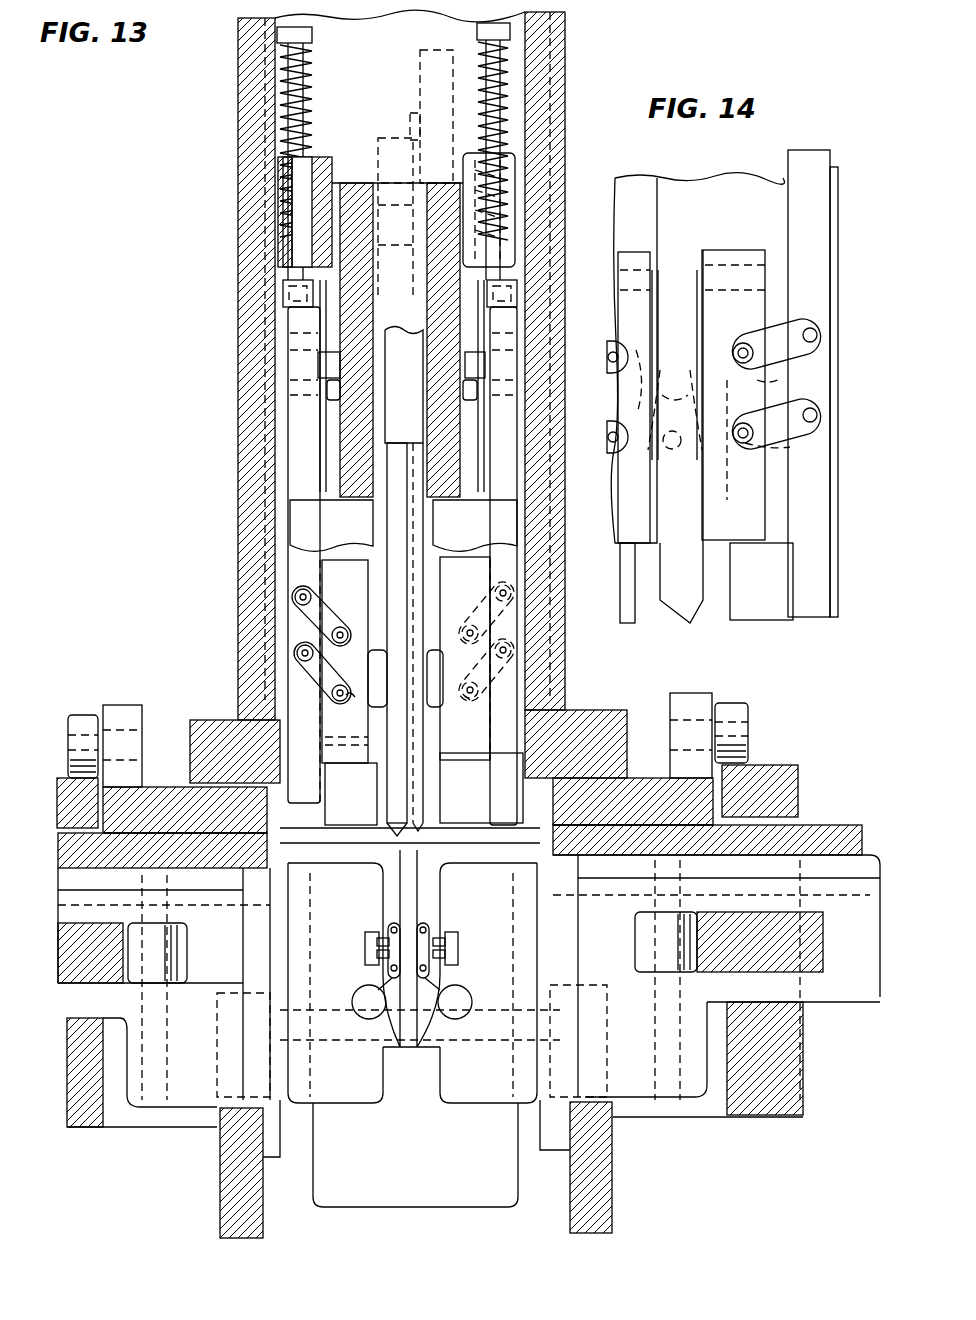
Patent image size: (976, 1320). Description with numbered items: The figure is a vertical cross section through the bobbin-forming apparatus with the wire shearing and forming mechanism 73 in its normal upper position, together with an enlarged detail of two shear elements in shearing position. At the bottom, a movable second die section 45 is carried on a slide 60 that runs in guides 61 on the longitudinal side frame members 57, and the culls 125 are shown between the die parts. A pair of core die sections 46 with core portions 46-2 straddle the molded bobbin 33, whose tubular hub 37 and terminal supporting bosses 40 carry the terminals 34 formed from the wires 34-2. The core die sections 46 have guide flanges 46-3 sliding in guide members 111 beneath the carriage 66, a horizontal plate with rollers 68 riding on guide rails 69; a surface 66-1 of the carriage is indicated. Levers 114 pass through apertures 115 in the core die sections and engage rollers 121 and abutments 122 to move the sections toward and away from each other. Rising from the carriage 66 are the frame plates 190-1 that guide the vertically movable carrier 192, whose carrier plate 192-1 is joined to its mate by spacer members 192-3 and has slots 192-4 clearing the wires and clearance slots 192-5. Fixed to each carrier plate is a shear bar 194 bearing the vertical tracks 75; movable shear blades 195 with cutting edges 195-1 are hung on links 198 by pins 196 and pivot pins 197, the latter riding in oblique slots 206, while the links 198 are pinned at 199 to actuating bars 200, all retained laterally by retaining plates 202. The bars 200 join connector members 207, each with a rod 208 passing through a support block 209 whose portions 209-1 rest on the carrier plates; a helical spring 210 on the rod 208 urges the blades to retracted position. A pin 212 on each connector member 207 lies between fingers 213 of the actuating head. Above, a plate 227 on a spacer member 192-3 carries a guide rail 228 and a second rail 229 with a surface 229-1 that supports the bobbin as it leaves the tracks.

In FIG. 13, the frame plates 190-1 is at (250, 156).
In FIG. 13, the helical spring 210 is at (312, 66).
In FIG. 13, the rod 208 is at (312, 106).
In FIG. 13, the support block 209 is at (290, 258).
In FIG. 13, the portions of support block 209-1 is at (287, 207).
In FIG. 13, the plate 227 is at (420, 60).
In FIG. 13, the guide rail 228 is at (410, 115).
In FIG. 13, the second rail 229 is at (383, 170).
In FIG. 13, the surface of second rail 229-1 is at (410, 134).
In FIG. 13, the spacer members 192-3 is at (356, 440).
In FIG. 14, the spacer members 192-3 is at (638, 397).
In FIG. 13, the pin 212 is at (468, 352).
In FIG. 13, the wire shearing and forming mechanism 73 is at (406, 625).
In FIG. 13, the connector members 207 is at (285, 314).
In FIG. 13, the fingers 213 is at (285, 296).
In FIG. 13, the retaining plates 202 is at (298, 524).
In FIG. 13, the clearance slots 192-5 is at (403, 525).
In FIG. 13, the shear blades 195 is at (330, 568).
In FIG. 14, the shear blades 195 is at (625, 543).
In FIG. 13, the pins 199 is at (294, 598).
In FIG. 13, the links 198 is at (340, 627).
In FIG. 14, the links 198 is at (610, 425).
In FIG. 13, the pin 196 is at (332, 636).
In FIG. 14, the pin 196 is at (608, 352).
In FIG. 13, the pivot pin 197 is at (331, 693).
In FIG. 14, the pivot pin 197 is at (608, 448).
In FIG. 13, the slots 206 is at (350, 700).
In FIG. 14, the slots 206 is at (790, 447).
In FIG. 13, the cutting edge 195-1 is at (378, 707).
In FIG. 14, the cutting edge 195-1 is at (776, 390).
In FIG. 13, the slots 192-4 is at (380, 744).
In FIG. 14, the slots 192-4 is at (630, 612).
In FIG. 13, the shear bar 194 is at (392, 773).
In FIG. 14, the shear bar 194 is at (690, 610).
In FIG. 13, the vertical tracks 75 is at (400, 800).
In FIG. 13, the carriage 66 is at (158, 798).
In FIG. 13, the block face 66-1 is at (270, 808).
In FIG. 13, the rollers 68 is at (82, 716).
In FIG. 13, the guide rails 69 is at (62, 790).
In FIG. 13, the guide members 111 is at (120, 860).
In FIG. 13, the guide flanges 46-3 is at (198, 888).
In FIG. 13, the levers 114 is at (88, 960).
In FIG. 13, the abutments 122 is at (820, 928).
In FIG. 13, the rollers 121 is at (170, 955).
In FIG. 13, the apertures 115 is at (110, 978).
In FIG. 13, the core die sections 46 is at (154, 1112).
In FIG. 13, the side frame members 57 is at (227, 1186).
In FIG. 13, the guides 61 is at (270, 1160).
In FIG. 13, the slide 60 is at (338, 1045).
In FIG. 13, the culls 125 is at (400, 1047).
In FIG. 13, the second die section 45 is at (396, 1195).
In FIG. 13, the wires 34-2 is at (388, 925).
In FIG. 13, the core portions 46-2 is at (366, 945).
In FIG. 13, the terminal supporting bosses 40 is at (376, 955).
In FIG. 14, the terminal supporting bosses 40 is at (676, 460).
In FIG. 13, the bobbin 33 is at (432, 966).
In FIG. 14, the bobbin 33 is at (637, 362).
In FIG. 14, the carrier 192 is at (640, 184).
In FIG. 14, the actuating bars 200 is at (795, 186).
In FIG. 14, the carrier plate 192-1 is at (838, 176).
In FIG. 14, the terminals 34 is at (697, 421).
In FIG. 14, the tubular hub 37 is at (675, 400).